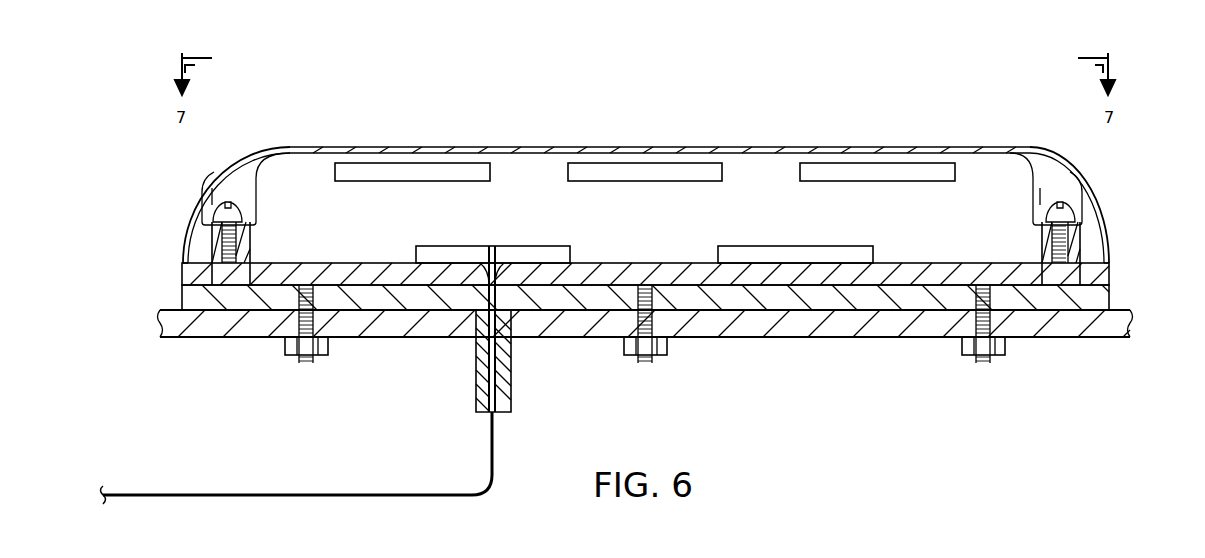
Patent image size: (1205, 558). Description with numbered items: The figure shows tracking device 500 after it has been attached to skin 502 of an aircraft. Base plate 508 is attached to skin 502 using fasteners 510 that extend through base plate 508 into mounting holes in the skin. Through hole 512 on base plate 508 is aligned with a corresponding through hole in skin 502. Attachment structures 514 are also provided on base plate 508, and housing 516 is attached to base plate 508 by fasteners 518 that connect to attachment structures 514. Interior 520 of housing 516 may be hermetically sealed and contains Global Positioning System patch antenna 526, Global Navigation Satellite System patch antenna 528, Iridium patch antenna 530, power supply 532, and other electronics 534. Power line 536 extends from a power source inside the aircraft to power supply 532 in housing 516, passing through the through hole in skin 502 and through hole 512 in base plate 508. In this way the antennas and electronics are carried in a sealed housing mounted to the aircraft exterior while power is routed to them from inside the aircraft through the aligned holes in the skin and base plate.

The tracking device 500 is at (394, 88).
The skin 502 is at (847, 337).
The base plate 508 is at (1100, 297).
The fasteners 510 is at (307, 263).
The through hole 512 is at (488, 412).
The attachment structures 514 is at (205, 234).
The housing 516 is at (763, 147).
The fasteners 518 is at (240, 203).
The interior 520 is at (747, 222).
The Global Positioning System patch antenna 526 is at (412, 181).
The Global Navigation Satellite System patch antenna 528 is at (658, 181).
The Iridium patch antenna 530 is at (877, 181).
The power supply 532 is at (473, 244).
The other electronics 534 is at (797, 246).
The power line 536 is at (218, 495).